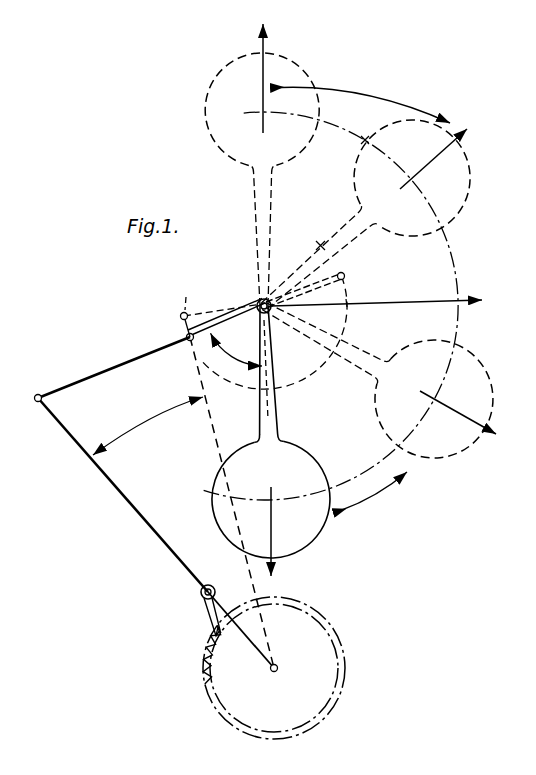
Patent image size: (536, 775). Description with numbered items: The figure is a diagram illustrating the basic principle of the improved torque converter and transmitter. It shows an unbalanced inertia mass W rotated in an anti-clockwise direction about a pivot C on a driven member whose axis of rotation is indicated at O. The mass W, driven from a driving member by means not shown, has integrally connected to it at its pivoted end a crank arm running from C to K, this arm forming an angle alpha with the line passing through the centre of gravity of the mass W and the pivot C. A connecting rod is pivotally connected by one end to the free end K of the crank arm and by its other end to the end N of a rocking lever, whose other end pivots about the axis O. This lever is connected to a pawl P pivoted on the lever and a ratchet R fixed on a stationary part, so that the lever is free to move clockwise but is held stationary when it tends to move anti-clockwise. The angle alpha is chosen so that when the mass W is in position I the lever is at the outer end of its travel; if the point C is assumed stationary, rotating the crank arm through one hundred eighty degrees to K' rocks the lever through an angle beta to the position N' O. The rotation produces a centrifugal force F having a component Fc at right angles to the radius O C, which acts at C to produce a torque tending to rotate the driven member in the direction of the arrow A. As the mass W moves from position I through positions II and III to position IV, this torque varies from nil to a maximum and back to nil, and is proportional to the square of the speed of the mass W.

The unbalanced inertia mass W is at (206, 104).
The centrifugal force F is at (263, 76).
The arrow indicating direction of torque A is at (360, 102).
The position IV of the mass IV is at (262, 121).
The position III of the mass III is at (421, 196).
The position II of the mass II is at (423, 396).
The position I of the mass I is at (263, 486).
The component of centrifugal force Fc is at (417, 303).
The pivot of the mass C is at (251, 294).
The free end of the crank arm K is at (216, 484).
The crank arm end in rotated position K' is at (317, 287).
The end of the rocking lever N is at (114, 464).
The rocked position of lever end N' is at (222, 315).
The pawl P is at (202, 628).
The axis of rotation of the driven member O is at (251, 643).
The ratchet R is at (341, 630).